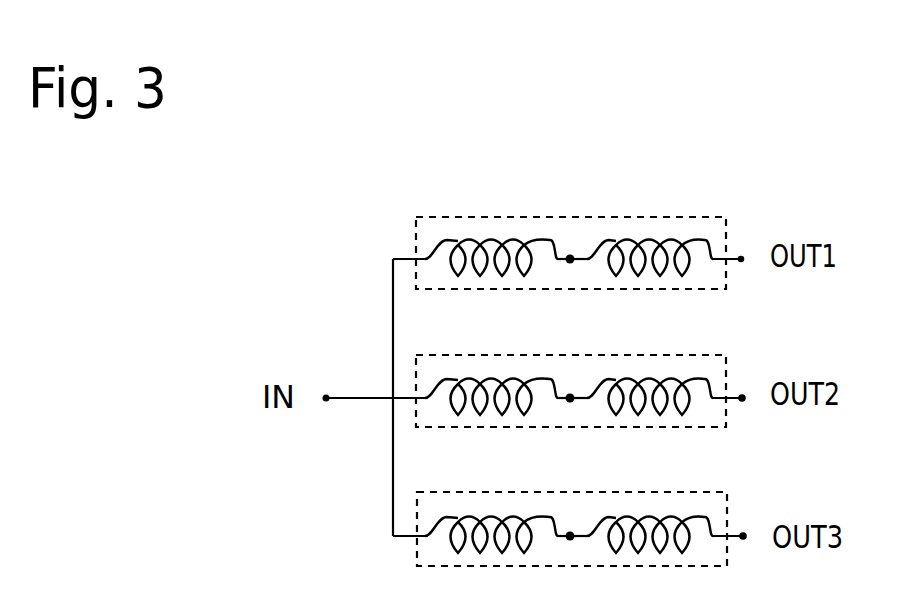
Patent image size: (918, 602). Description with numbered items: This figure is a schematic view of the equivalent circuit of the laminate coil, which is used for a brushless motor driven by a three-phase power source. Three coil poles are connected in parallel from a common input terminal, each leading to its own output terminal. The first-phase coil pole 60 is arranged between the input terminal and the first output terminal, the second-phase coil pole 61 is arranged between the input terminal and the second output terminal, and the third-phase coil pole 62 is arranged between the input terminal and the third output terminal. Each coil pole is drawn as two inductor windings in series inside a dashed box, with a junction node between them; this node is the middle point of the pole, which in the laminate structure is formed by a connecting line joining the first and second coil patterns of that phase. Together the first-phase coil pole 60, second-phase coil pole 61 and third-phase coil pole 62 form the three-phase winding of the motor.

The first-phase coil pole 60 is at (572, 217).
The second-phase coil pole 61 is at (568, 355).
The third-phase coil pole 62 is at (575, 492).